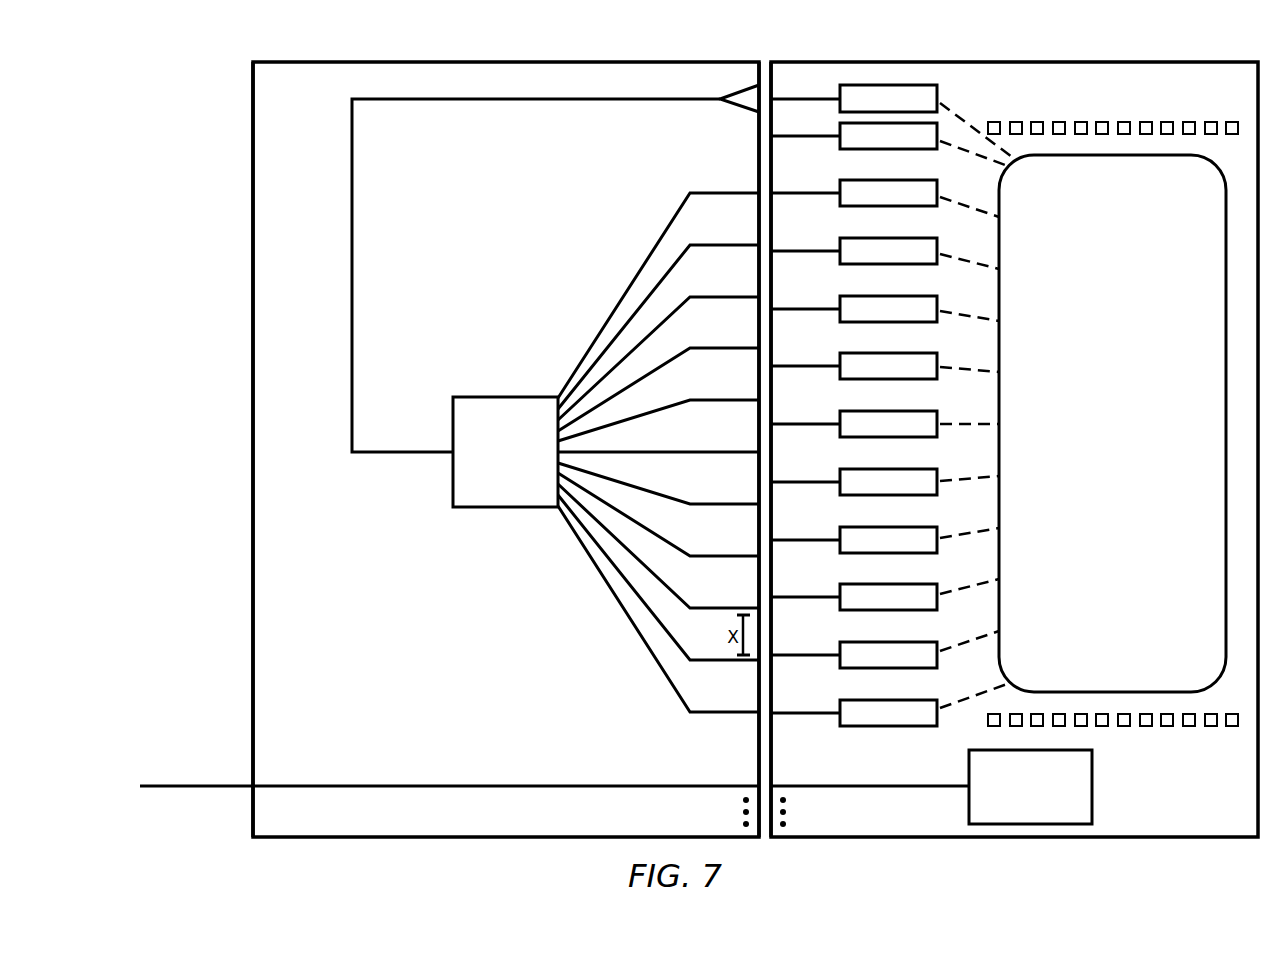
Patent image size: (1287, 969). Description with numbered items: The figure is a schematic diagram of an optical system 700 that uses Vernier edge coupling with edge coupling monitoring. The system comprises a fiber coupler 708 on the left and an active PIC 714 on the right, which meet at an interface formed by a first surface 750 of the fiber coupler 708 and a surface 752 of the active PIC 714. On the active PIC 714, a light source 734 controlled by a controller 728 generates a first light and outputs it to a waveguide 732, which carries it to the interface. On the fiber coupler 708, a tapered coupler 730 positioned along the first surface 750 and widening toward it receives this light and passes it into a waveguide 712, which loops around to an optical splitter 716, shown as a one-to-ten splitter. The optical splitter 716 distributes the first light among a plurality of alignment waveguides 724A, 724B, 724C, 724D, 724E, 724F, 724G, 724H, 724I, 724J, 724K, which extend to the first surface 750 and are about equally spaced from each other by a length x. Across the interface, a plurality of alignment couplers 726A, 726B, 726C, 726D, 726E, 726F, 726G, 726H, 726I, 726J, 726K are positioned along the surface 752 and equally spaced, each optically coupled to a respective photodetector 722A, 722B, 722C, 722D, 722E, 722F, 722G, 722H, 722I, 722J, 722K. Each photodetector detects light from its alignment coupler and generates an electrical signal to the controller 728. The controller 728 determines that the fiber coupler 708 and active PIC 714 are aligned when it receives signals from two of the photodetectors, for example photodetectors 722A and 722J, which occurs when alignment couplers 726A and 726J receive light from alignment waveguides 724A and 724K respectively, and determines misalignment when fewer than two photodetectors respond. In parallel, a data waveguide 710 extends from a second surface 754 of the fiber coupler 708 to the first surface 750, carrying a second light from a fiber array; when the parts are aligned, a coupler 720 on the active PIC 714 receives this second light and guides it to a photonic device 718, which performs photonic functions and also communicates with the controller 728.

The optical system 700 is at (150, 40).
The fiber coupler 708 is at (505, 63).
The waveguide 710 is at (505, 783).
The waveguide 712 is at (352, 270).
The active PIC 714 is at (1018, 63).
The optical splitter 716 is at (505, 452).
The photonic device 718 is at (1092, 786).
The coupler 720 is at (807, 783).
The photodetector 722A is at (890, 726).
The photodetector 722B is at (890, 668).
The photodetector 722C is at (890, 610).
The photodetector 722D is at (890, 553).
The photodetector 722E is at (890, 495).
The photodetector 722F is at (890, 437).
The photodetector 722G is at (890, 379).
The photodetector 722H is at (890, 322).
The photodetector 722I is at (890, 264).
The photodetector 722J is at (890, 206).
The photodetector 722K is at (890, 149).
The alignment waveguide 724A is at (723, 709).
The alignment waveguide 724B is at (698, 657).
The alignment waveguide 724C is at (723, 605).
The alignment waveguide 724D is at (723, 553).
The alignment waveguide 724E is at (723, 501).
The alignment waveguide 724F is at (723, 449).
The alignment waveguide 724G is at (723, 397).
The alignment waveguide 724H is at (723, 345).
The alignment waveguide 724I is at (723, 294).
The alignment waveguide 724J is at (723, 242).
The alignment waveguide 724K is at (723, 190).
The alignment coupler 726A is at (806, 710).
The alignment coupler 726B is at (806, 652).
The alignment coupler 726C is at (806, 594).
The alignment coupler 726D is at (806, 537).
The alignment coupler 726E is at (806, 479).
The alignment coupler 726F is at (806, 421).
The alignment coupler 726G is at (806, 363).
The alignment coupler 726H is at (806, 306).
The alignment coupler 726I is at (806, 248).
The alignment coupler 726J is at (823, 192).
The alignment coupler 726K is at (797, 139).
The controller 728 is at (1112, 423).
The tapered coupler 730 is at (738, 109).
The waveguide 732 is at (817, 98).
The light source 734 is at (940, 93).
The first surface 750 is at (758, 75).
The surface 752 is at (772, 75).
The second surface 754 is at (253, 100).